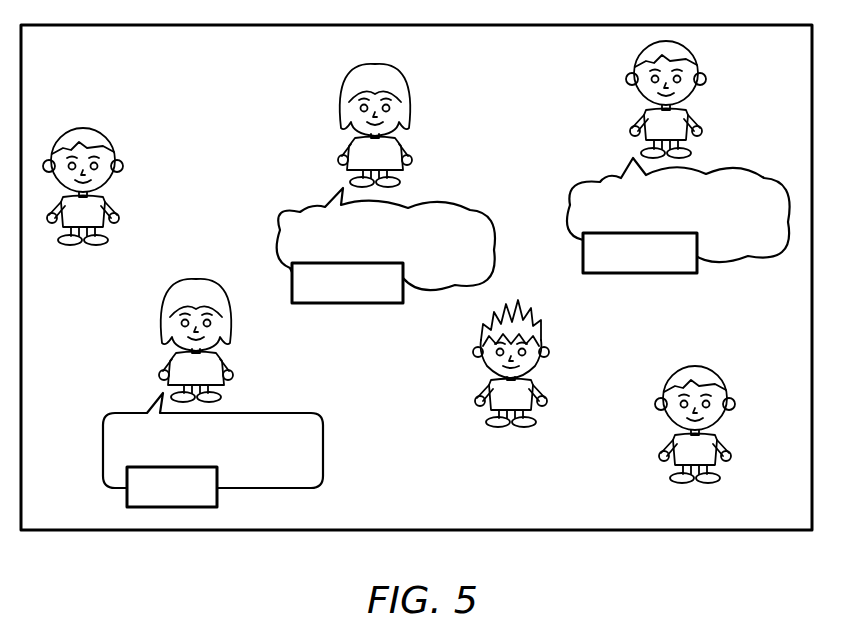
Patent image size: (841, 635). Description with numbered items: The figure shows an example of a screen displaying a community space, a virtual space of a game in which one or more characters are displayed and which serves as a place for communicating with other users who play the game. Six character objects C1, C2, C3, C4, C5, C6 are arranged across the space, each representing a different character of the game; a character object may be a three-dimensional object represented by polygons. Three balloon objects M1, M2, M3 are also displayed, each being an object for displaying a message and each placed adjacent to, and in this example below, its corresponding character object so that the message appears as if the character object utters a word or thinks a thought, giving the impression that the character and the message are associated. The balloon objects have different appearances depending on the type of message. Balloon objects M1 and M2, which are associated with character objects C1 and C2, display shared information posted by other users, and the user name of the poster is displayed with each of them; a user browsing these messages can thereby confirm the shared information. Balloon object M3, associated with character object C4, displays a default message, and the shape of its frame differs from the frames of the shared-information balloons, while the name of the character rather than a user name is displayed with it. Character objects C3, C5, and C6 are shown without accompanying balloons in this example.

The character object C1 is at (690, 122).
The character object C2 is at (405, 147).
The character object C3 is at (110, 198).
The character object C4 is at (222, 355).
The character object C5 is at (532, 377).
The character object C6 is at (720, 442).
The balloon object M1 is at (730, 258).
The balloon object M2 is at (452, 202).
The balloon object M3 is at (323, 455).